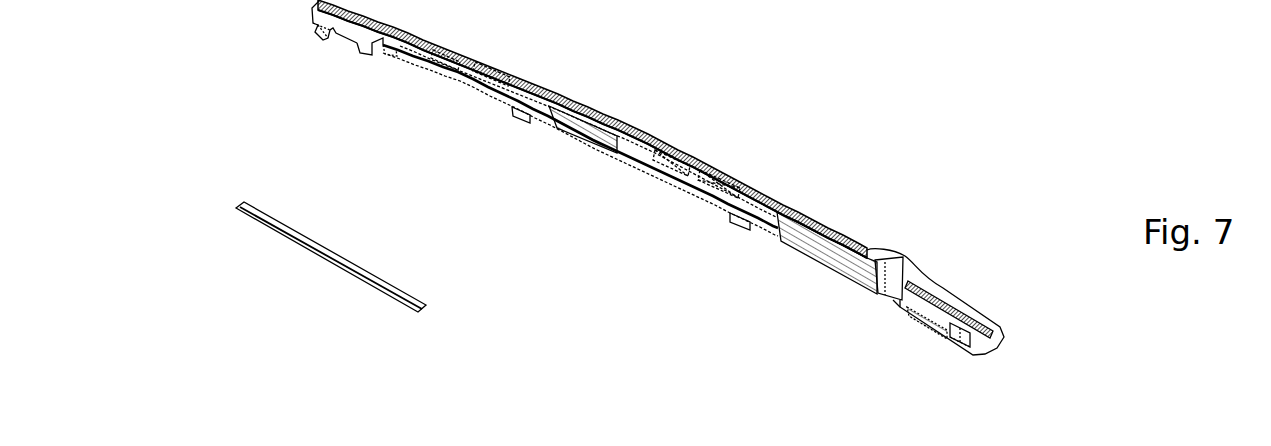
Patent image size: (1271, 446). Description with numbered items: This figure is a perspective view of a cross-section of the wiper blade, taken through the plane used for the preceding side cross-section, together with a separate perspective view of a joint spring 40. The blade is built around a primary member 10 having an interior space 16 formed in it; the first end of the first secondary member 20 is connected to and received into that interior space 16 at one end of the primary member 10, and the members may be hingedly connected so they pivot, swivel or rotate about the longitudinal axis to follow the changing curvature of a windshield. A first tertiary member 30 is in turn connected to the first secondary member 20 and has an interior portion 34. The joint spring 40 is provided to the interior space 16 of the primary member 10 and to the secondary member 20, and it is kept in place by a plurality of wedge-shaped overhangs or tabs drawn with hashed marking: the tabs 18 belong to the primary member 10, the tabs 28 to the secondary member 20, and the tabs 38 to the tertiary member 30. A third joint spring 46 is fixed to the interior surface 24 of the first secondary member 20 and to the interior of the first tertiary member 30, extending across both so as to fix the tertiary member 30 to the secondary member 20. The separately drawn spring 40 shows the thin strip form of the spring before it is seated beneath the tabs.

The primary member 10 is at (850, 238).
The interior space 16 is at (778, 226).
The wedge-shaped overhangs/tabs 18 is at (762, 226).
The first secondary member 20 is at (643, 134).
The interior surface 24 is at (535, 102).
The wedge-shaped overhangs/tabs 28 is at (640, 162).
The first tertiary member 30 is at (412, 42).
The interior portion 34 is at (427, 55).
The wedge-shaped overhangs/tabs 38 is at (418, 53).
The joint spring 40 is at (680, 172).
The third joint spring 46 is at (416, 55).